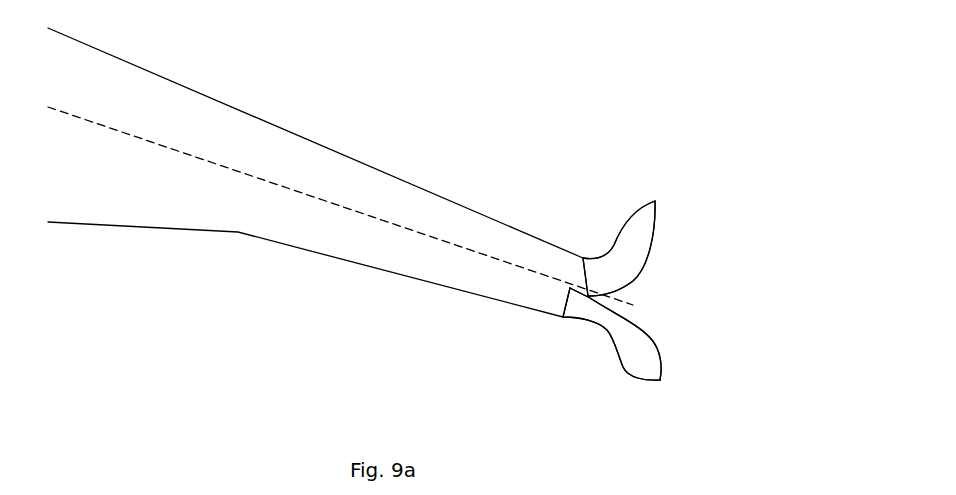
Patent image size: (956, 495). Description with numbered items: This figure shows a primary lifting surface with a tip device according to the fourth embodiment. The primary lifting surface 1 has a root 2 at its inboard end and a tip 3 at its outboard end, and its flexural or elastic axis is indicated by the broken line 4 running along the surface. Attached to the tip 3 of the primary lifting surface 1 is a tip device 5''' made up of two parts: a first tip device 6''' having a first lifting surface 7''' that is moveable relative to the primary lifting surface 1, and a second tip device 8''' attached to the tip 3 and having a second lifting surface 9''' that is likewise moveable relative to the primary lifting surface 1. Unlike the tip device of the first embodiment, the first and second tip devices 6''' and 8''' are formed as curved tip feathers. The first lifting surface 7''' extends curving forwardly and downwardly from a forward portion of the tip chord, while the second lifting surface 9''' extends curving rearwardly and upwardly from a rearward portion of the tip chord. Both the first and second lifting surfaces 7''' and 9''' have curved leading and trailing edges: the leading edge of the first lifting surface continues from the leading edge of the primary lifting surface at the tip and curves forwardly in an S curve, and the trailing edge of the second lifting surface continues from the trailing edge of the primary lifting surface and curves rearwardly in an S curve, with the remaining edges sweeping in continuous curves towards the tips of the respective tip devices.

The lifting surface 1 is at (375, 138).
The root 2 is at (87, 243).
The tip 3 is at (568, 323).
The flexural axis 4 is at (535, 287).
The tip device 5''' is at (651, 167).
The first tip device 6''' is at (712, 216).
The first lifting surface 7''' is at (600, 207).
The second tip device 8''' is at (694, 301).
The second lifting surface 9''' is at (630, 380).